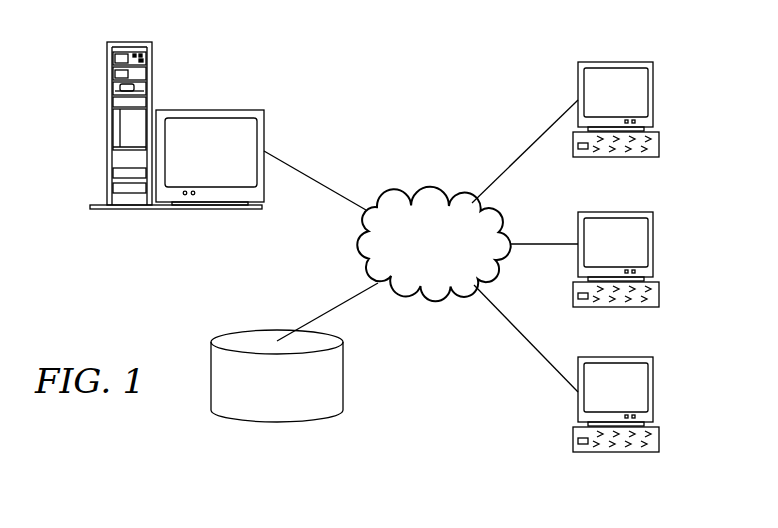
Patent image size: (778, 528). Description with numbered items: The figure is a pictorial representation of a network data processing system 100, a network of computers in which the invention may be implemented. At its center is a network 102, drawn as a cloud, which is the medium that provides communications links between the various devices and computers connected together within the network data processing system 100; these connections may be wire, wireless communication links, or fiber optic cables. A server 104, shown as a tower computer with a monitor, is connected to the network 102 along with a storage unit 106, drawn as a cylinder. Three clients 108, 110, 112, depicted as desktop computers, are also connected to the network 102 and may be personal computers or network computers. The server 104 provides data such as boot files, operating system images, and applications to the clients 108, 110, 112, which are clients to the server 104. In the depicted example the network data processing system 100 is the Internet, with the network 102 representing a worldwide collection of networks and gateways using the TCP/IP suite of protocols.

The network data processing system 100 is at (486, 66).
The network 102 is at (397, 190).
The server 104 is at (108, 126).
The storage unit 106 is at (258, 422).
The client 108 is at (653, 95).
The client 110 is at (653, 243).
The client 112 is at (653, 392).